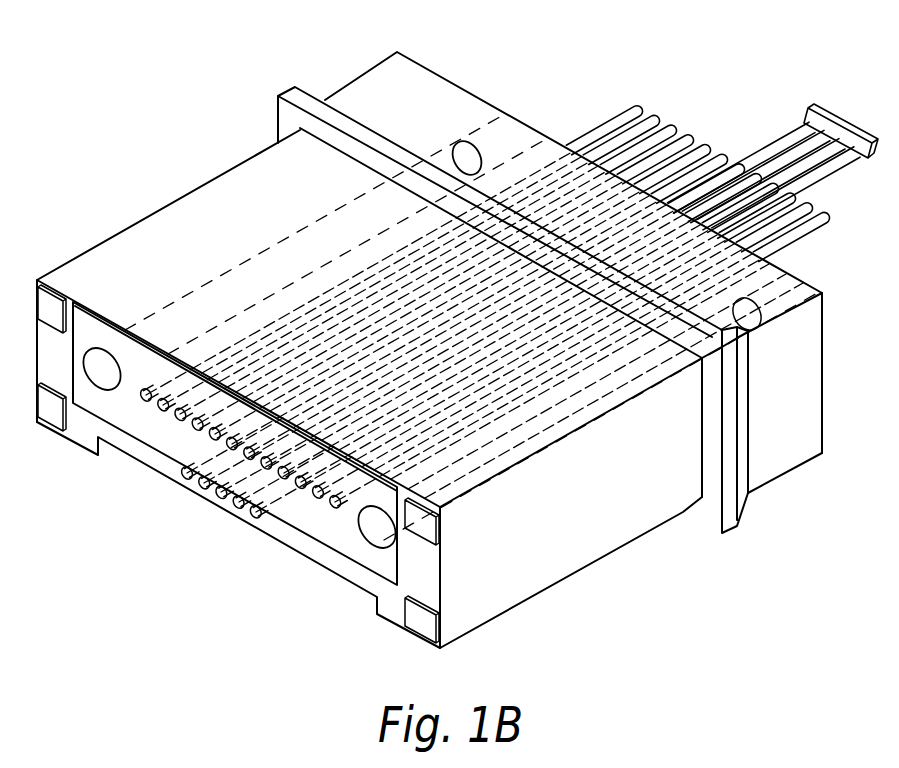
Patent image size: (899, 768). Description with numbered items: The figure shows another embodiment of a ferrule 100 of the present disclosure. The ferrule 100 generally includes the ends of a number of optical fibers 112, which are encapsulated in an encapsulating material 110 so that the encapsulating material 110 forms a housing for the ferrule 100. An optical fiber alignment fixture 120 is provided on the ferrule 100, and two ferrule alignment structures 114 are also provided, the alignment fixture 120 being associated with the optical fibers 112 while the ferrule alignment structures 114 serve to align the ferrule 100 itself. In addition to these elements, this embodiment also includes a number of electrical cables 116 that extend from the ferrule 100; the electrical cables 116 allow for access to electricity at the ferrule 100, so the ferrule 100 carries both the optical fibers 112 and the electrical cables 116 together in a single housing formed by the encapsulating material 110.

The ferrule 100 is at (92, 70).
The encapsulating material 110 is at (360, 73).
The optical fibers 112 is at (600, 127).
The ferrule alignment structures 114 is at (485, 165).
The electrical cables 116 is at (764, 140).
The optical fiber alignment fixture 120 is at (97, 329).